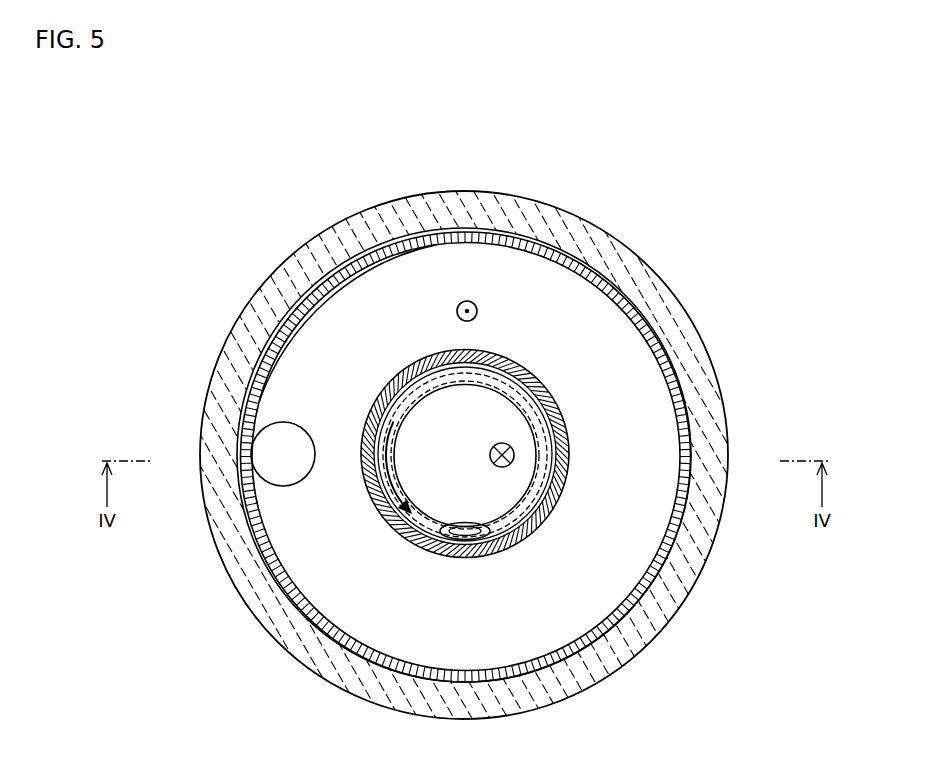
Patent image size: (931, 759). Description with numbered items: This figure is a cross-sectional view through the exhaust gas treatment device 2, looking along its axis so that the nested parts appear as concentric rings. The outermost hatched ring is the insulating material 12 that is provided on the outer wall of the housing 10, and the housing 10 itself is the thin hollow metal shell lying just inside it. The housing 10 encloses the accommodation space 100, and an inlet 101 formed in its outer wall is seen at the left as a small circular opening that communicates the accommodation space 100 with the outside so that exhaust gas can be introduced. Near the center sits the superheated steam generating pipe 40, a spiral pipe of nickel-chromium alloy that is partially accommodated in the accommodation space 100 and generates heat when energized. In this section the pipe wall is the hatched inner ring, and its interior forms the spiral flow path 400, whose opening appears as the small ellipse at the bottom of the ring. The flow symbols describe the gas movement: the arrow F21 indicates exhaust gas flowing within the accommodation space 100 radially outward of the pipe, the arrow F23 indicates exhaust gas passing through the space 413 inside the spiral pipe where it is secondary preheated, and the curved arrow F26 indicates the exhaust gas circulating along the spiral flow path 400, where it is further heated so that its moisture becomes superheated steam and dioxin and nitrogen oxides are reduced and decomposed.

The damper device 2 is at (624, 204).
The housing 10 is at (246, 530).
The insulating material 12 is at (228, 392).
The accommodation space 100 is at (322, 353).
The inlet 101 is at (272, 452).
The superheated steam generating pipe 40 is at (562, 519).
The space 413 is at (432, 497).
The flow path 400 is at (467, 533).
The exhaust gas flow F21 is at (457, 311).
The exhaust gas flow F23 is at (490, 455).
The exhaust gas F26 is at (374, 419).